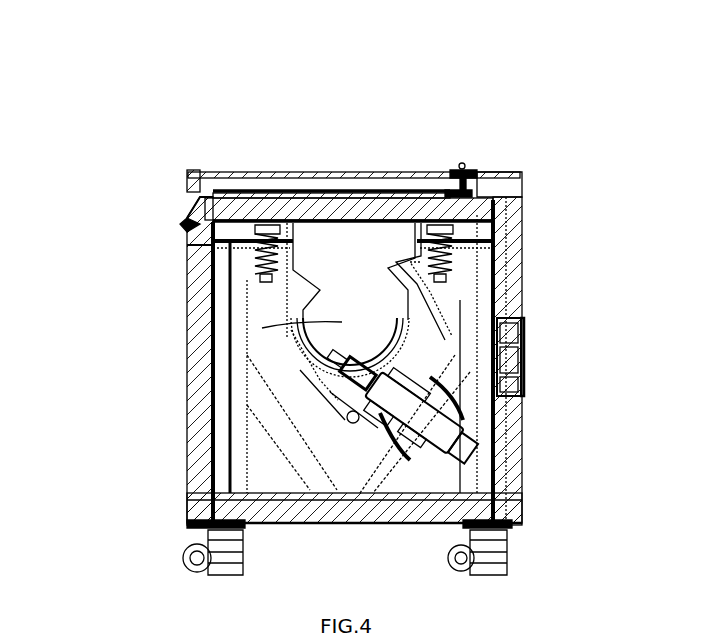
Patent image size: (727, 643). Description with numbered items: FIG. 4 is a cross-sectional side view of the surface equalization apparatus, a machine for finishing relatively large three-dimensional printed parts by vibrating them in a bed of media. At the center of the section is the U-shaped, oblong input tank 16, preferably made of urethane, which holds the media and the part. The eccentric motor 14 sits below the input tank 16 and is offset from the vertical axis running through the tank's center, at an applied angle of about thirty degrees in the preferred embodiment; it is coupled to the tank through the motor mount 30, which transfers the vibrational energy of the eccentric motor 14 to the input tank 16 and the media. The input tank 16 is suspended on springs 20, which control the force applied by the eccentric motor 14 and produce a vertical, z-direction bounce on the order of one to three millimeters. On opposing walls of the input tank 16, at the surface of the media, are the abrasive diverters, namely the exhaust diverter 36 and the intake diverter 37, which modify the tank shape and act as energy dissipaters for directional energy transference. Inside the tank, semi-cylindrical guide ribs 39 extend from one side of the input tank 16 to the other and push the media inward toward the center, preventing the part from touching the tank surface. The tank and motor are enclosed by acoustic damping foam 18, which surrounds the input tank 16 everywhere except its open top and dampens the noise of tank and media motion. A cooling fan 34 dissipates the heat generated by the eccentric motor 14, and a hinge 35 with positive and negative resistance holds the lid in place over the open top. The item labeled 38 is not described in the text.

The eccentric motor 14 is at (470, 450).
The input tank 16 is at (290, 327).
The acoustic damping foam 18 is at (240, 190).
The springs 20 is at (190, 250).
The motor mount 30 is at (440, 335).
The cooling fan 34 is at (523, 352).
The hinge 35 is at (470, 170).
The exhaust diverter 36 is at (400, 255).
The intake diverter 37 is at (310, 262).
The top panel 38 is at (425, 175).
The guide ribs 39 is at (300, 355).